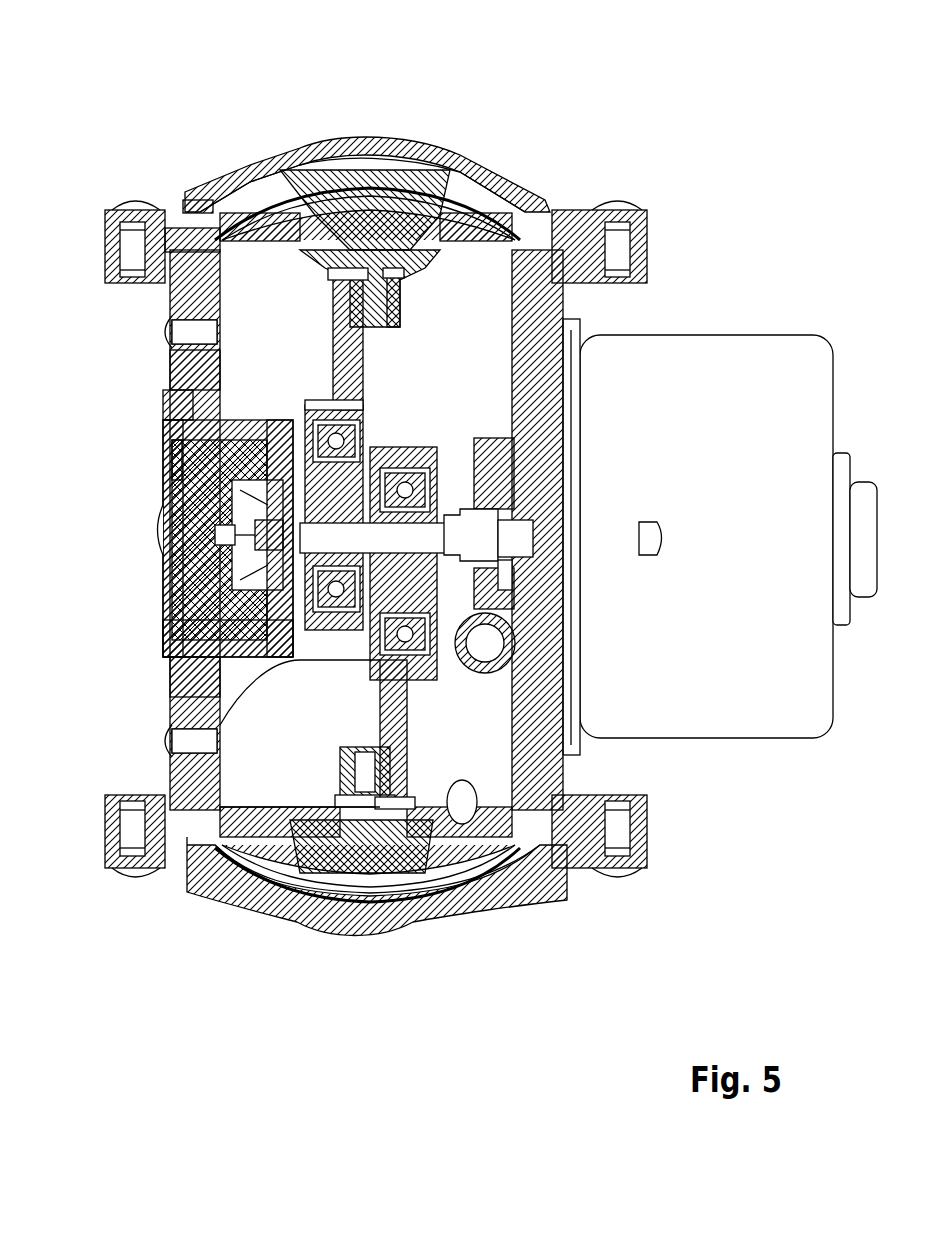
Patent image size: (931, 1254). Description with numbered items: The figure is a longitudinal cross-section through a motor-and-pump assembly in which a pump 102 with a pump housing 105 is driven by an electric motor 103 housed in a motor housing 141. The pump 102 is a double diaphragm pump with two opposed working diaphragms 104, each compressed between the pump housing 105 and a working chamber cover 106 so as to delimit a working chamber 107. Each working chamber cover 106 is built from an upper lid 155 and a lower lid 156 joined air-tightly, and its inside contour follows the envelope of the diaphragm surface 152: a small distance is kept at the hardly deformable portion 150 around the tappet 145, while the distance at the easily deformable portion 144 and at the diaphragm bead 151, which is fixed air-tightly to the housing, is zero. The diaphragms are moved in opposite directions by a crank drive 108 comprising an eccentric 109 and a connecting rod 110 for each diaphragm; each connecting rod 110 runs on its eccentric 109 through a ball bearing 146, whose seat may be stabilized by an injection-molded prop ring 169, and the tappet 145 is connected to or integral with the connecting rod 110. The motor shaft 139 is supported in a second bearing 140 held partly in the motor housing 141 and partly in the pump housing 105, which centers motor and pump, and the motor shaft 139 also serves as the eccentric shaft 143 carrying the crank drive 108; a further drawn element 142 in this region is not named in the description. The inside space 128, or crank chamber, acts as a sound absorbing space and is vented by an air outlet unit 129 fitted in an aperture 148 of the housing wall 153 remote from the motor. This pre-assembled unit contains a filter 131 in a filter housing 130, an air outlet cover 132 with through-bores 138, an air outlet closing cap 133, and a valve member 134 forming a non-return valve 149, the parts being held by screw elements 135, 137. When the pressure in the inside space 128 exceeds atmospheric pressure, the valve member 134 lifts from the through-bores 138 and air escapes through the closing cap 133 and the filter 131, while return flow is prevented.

The pump 102 is at (138, 172).
The electric motor 103 is at (745, 337).
The working diaphragm 104 is at (465, 900).
The pump housing 105 is at (535, 762).
The working chamber cover 106 is at (552, 188).
The working chamber 107 is at (372, 930).
The crank drive 108 is at (385, 432).
The eccentric 109 is at (322, 470).
The connecting rod 110 is at (350, 350).
The inside space 128 is at (270, 770).
The air outlet unit 129 is at (168, 598).
The filter housing 130 is at (178, 642).
The filter 131 is at (175, 408).
The air outlet cover 132 is at (178, 680).
The air outlet closing cap 133 is at (185, 558).
The valve member 134 is at (178, 472).
The screw element 135 is at (170, 741).
The screw element 137 is at (165, 522).
The through-bore 138 is at (302, 600).
The motor shaft 139 is at (485, 508).
The second bearing 140 is at (515, 580).
The motor housing 141 is at (560, 625).
The bearing support 142 is at (515, 445).
The eccentric shaft 143 is at (455, 505).
The easily deformable portion 144 is at (240, 212).
The tappet 145 is at (405, 212).
The ball bearing 146 is at (340, 590).
The aperture 148 is at (178, 370).
The non-return valve 149 is at (175, 452).
The hardly deformable portion 150 is at (365, 180).
The diaphragm bead 151 is at (208, 212).
The diaphragm surface 152 is at (282, 880).
The wall 153 is at (185, 290).
The upper lid 155 is at (522, 205).
The lower lid 156 is at (468, 195).
The prop ring 169 is at (318, 405).